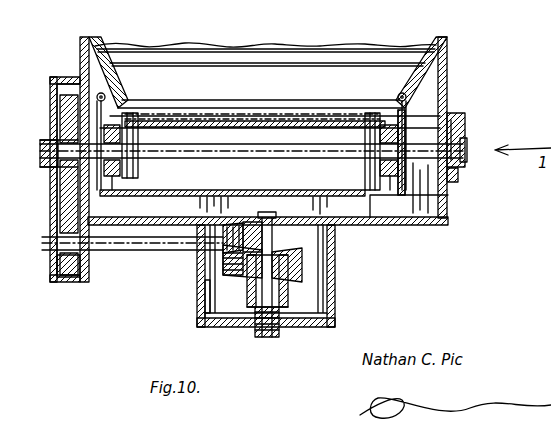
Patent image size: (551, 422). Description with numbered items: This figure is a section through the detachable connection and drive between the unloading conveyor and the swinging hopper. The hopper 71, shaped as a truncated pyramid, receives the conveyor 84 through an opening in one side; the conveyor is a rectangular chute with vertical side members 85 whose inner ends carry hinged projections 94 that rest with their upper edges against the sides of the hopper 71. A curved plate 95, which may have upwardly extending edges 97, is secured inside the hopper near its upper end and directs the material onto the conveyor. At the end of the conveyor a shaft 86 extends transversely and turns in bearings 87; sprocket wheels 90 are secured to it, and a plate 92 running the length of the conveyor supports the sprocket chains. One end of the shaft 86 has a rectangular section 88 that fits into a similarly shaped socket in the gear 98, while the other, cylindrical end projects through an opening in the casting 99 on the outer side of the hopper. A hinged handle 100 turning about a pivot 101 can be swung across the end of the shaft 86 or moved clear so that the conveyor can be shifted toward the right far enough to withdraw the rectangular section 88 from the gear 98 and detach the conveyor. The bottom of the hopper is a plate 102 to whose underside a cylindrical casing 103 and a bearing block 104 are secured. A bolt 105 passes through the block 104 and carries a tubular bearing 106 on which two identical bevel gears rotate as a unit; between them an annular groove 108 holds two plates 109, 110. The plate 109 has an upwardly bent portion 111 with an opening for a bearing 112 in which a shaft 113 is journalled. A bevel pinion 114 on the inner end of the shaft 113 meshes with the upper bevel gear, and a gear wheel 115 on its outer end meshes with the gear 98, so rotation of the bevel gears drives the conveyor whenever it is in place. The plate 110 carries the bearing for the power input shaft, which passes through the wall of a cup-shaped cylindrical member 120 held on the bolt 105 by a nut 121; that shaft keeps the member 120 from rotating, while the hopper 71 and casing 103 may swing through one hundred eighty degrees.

The hopper 71 is at (80, 44).
The conveyor 84 is at (352, 224).
The vertical side members 85 is at (80, 190).
The shaft 86 is at (207, 158).
The bearings 87 is at (121, 167).
The rectangular section 88 is at (55, 180).
The sprocket wheels 90 is at (140, 138).
The plate 92 is at (268, 125).
The hinged projections 94 is at (82, 66).
The curved plate 95 is at (176, 72).
The upwardly extending edges 97 is at (91, 43).
The gear 98 is at (50, 102).
The casting 99 is at (460, 170).
The hinged handle 100 is at (477, 138).
The pivot 101 is at (470, 123).
The plate 102 is at (423, 223).
The cylindrical casing 103 is at (335, 255).
The bearing block 104 is at (316, 242).
The bolt 105 is at (263, 220).
The tubular bearing 106 is at (262, 292).
The annular groove 108 is at (242, 282).
The plate 109 is at (302, 272).
The plate 110 is at (300, 290).
The upwardly bent portion 111 is at (210, 262).
The bearing 112 is at (180, 222).
The shaft 113 is at (107, 243).
The bevel pinion 114 is at (233, 232).
The gear wheel 115 is at (56, 282).
The cup-shaped cylindrical member 120 is at (198, 313).
The nut 121 is at (280, 337).